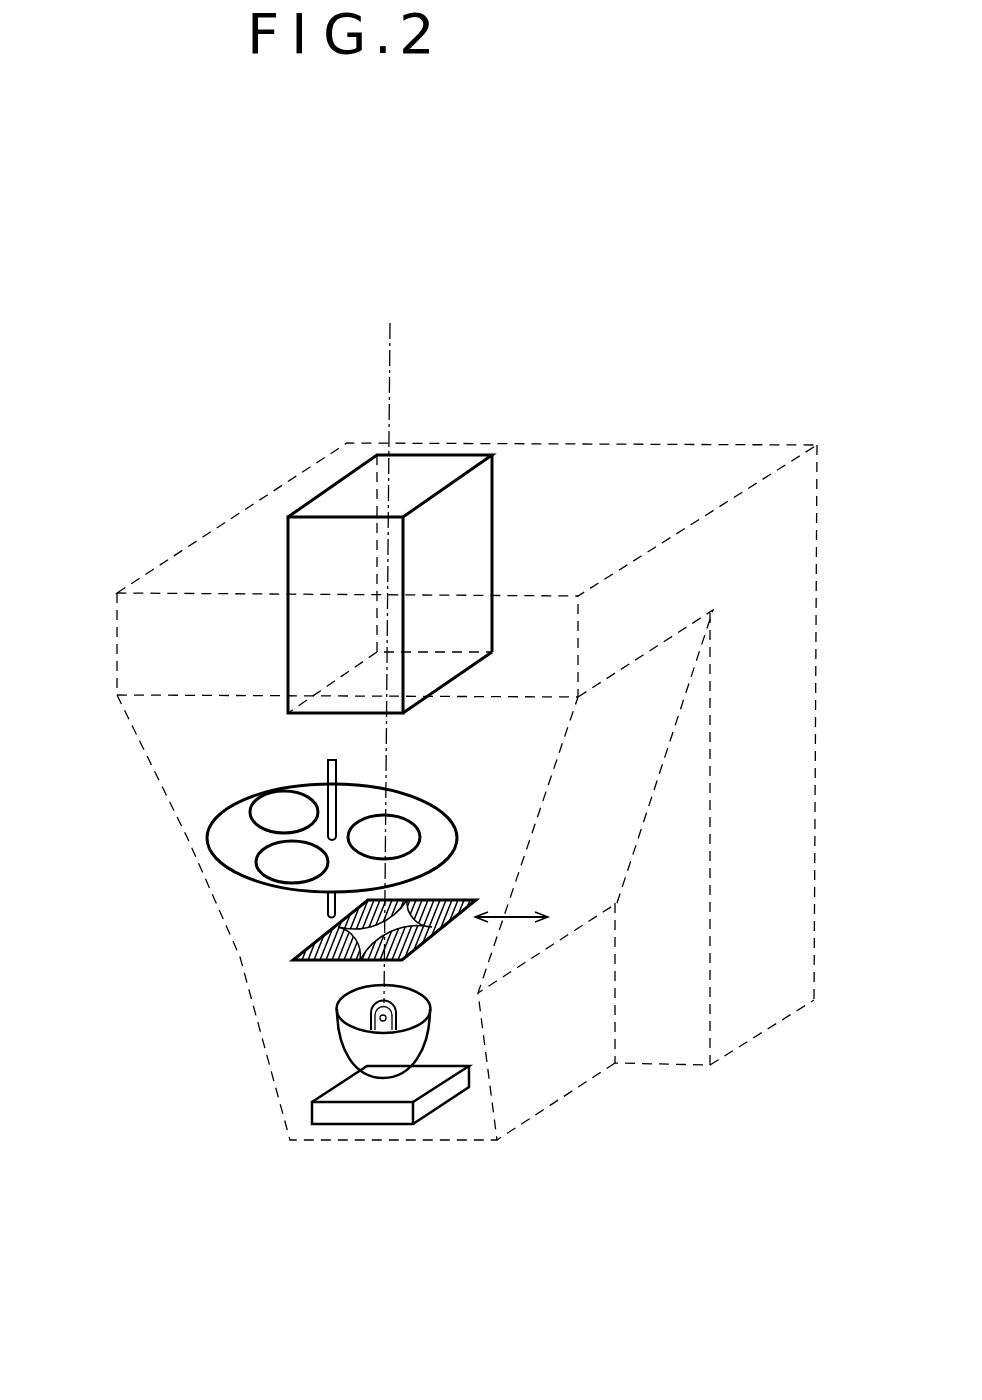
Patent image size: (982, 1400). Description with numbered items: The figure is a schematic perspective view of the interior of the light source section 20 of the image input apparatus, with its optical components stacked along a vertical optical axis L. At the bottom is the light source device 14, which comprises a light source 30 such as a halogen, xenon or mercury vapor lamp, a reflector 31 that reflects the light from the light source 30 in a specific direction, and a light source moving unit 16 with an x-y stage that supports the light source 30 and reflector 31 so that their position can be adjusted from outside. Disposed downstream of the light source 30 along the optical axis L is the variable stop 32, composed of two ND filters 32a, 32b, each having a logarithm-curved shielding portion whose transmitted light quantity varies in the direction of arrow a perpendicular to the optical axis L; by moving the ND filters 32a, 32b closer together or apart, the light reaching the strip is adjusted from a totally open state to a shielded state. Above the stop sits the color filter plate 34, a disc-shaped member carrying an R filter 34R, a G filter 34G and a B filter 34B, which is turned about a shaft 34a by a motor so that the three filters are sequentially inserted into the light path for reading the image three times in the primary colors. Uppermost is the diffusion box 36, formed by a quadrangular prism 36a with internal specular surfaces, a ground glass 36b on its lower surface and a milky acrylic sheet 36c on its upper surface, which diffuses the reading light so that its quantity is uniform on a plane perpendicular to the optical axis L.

The light source device 14 is at (369, 1117).
The light source moving unit 16 is at (402, 1122).
The light source section 20 is at (307, 1143).
The light source 30 is at (392, 1010).
The reflector 31 is at (402, 1057).
The variable stop 32 is at (371, 993).
The ND filter 32a is at (417, 952).
The ND filter 32b is at (310, 942).
The color filter plate 34 is at (295, 843).
The R filter 34R is at (283, 805).
The G filter 34G is at (407, 837).
The B filter 34B is at (287, 858).
The shaft 34a is at (387, 790).
The diffusion box 36 is at (371, 518).
The quadrangular prism 36a is at (482, 542).
The ground glass 36b is at (450, 690).
The milky acrylic sheet 36c is at (340, 507).
The optical axis L is at (393, 380).
The arrow a is at (507, 917).